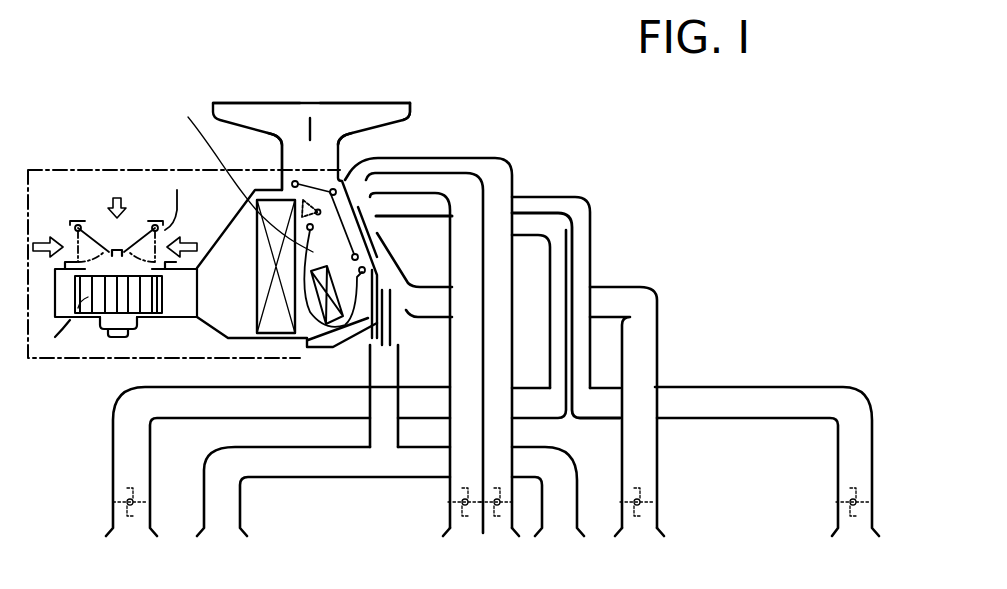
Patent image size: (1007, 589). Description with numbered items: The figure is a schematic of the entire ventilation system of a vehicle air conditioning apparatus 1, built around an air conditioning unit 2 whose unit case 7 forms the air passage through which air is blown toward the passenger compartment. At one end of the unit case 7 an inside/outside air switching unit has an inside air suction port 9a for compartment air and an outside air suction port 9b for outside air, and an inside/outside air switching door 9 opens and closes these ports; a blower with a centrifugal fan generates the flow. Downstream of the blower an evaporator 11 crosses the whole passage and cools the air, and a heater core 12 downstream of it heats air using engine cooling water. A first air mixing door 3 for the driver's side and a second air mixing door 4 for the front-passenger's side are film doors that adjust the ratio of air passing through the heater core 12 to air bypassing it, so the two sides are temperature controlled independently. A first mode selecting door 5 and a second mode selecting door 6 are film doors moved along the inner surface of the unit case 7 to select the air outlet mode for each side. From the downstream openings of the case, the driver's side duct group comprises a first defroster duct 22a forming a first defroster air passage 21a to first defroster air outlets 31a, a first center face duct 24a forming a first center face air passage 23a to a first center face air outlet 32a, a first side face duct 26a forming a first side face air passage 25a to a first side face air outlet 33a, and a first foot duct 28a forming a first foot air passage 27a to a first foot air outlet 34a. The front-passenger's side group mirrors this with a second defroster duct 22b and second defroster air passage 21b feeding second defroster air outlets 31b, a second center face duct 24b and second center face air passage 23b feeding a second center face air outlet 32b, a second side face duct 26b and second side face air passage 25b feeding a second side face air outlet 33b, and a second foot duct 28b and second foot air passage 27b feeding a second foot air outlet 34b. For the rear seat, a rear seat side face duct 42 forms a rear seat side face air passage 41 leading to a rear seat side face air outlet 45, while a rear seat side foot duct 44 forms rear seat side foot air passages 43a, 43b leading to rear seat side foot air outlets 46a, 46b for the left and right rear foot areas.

The air conditioning apparatus 1 is at (100, 55).
The air conditioning unit 2 is at (49, 168).
The first air mixing door 3 is at (238, 170).
The second air mixing door 4 is at (239, 144).
The first mode selecting door 5 is at (347, 198).
The second mode selecting door 6 is at (384, 193).
The unit case 7 is at (222, 230).
The inside/outside air switching door 9 is at (93, 223).
The inside air suction port 9a is at (72, 226).
The outside air suction port 9b is at (136, 223).
The evaporator 11 is at (272, 323).
The heater core 12 is at (406, 233).
The first defroster air passage 21a is at (340, 105).
The second defroster air passage 21b is at (281, 127).
The first defroster duct 22a is at (412, 108).
The second defroster duct 22b is at (282, 148).
The first center face air passage 23a is at (512, 160).
The second center face air passage 23b is at (467, 432).
The first center face duct 24a is at (518, 178).
The second center face duct 24b is at (450, 488).
The first side face air passage 25a is at (855, 446).
The second side face air passage 25b is at (118, 425).
The first side face duct 26a is at (838, 480).
The second side face duct 26b is at (113, 462).
The first foot air passage 27a is at (395, 333).
The second foot air passage 27b is at (336, 342).
The first foot duct 28a is at (412, 300).
The second foot duct 28b is at (298, 346).
The first defroster air outlets 31a is at (330, 103).
The second defroster air outlets 31b is at (232, 103).
The first center face air outlet 32a is at (498, 533).
The second center face air outlet 32b is at (456, 533).
The first side face air outlet 33a is at (850, 532).
The second side face air outlet 33b is at (132, 530).
The first foot air outlet 34a is at (398, 346).
The second foot air outlet 34b is at (370, 346).
The rear seat side face air passage 41 is at (652, 325).
The rear seat side face duct 42 is at (658, 456).
The rear seat side foot air passage 43a is at (565, 477).
The rear seat side foot air passage 43b is at (218, 468).
The rear seat side foot duct 44 is at (350, 480).
The rear seat side face air outlet 45 is at (640, 532).
The rear seat side foot air outlet 46a is at (560, 533).
The rear seat side foot air outlet 46b is at (222, 530).